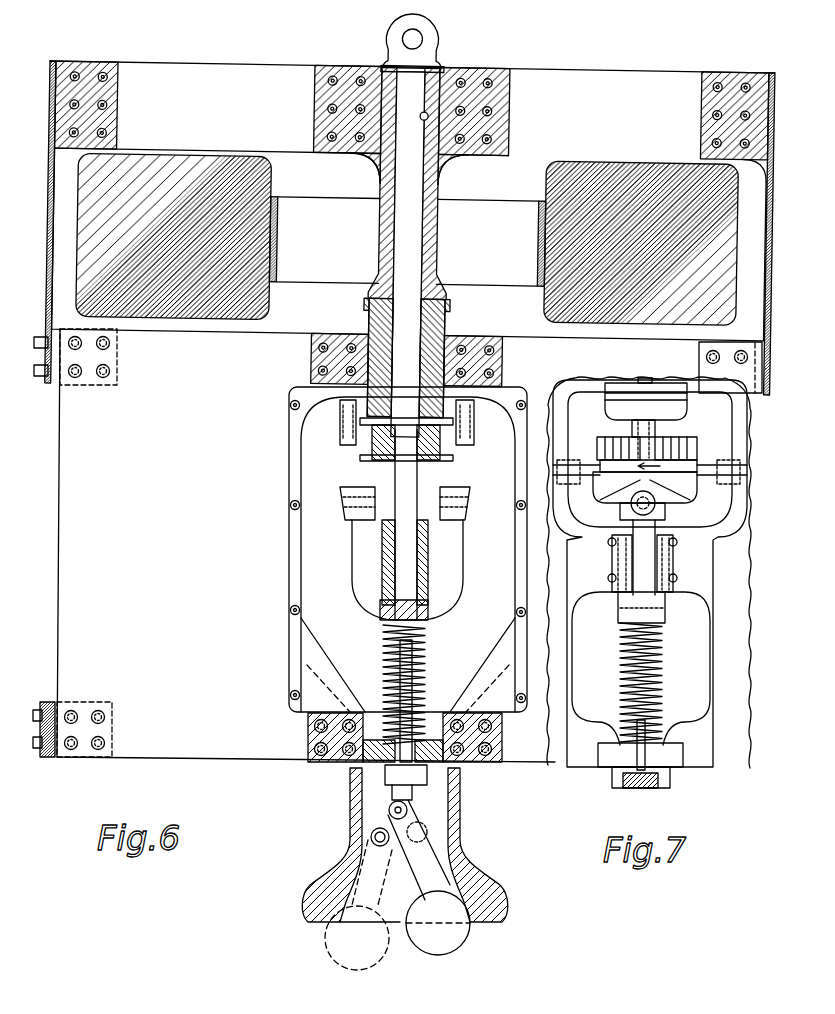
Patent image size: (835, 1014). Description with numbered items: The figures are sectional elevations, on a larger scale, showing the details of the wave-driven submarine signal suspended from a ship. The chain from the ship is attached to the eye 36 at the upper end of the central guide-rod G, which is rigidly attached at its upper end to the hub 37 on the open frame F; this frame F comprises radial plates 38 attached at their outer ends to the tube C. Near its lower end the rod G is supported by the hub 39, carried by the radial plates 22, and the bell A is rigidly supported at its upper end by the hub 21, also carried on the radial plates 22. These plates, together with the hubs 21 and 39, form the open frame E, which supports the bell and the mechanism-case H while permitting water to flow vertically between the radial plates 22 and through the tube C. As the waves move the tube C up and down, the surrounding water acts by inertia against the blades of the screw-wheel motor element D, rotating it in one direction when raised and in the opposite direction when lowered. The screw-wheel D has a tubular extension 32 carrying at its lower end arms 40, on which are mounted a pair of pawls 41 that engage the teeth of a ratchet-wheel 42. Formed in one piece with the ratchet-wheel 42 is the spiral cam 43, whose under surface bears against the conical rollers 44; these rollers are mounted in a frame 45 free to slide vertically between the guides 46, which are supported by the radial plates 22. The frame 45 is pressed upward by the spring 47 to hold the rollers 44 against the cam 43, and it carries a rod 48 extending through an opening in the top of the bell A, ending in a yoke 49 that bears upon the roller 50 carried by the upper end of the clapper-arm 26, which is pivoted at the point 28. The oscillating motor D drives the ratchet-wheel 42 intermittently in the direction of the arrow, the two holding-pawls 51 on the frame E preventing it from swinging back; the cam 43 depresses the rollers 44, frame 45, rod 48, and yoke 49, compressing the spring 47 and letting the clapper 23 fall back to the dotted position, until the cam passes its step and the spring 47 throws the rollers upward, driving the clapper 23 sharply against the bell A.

In FIG. 6, the hub 21 is at (443, 765).
In FIG. 7, the hub 21 is at (665, 758).
In FIG. 6, the radial plates 22 is at (64, 437).
In FIG. 7, the radial plates 22 is at (725, 592).
In FIG. 6, the clapper 23 is at (443, 938).
In FIG. 6, the clapper-arm 26 is at (420, 905).
In FIG. 6, the pivot point 28 is at (372, 840).
In FIG. 6, the tubular extension 32 is at (406, 357).
In FIG. 6, the eye 36 is at (434, 38).
In FIG. 6, the hub 37 is at (452, 75).
In FIG. 6, the radial plates 38 is at (208, 73).
In FIG. 6, the hub 39 is at (449, 332).
In FIG. 6, the arms 40 is at (358, 408).
In FIG. 7, the arms 40 is at (668, 418).
In FIG. 6, the pawls 41 is at (357, 446).
In FIG. 7, the pawls 41 is at (628, 442).
In FIG. 6, the ratchet-wheel 42 is at (447, 456).
In FIG. 7, the ratchet-wheel 42 is at (665, 445).
In FIG. 6, the spiral cam 43 is at (348, 480).
In FIG. 7, the spiral cam 43 is at (610, 498).
In FIG. 6, the conical rollers 44 is at (354, 513).
In FIG. 7, the conical rollers 44 is at (656, 507).
In FIG. 6, the frame 45 is at (366, 562).
In FIG. 7, the frame 45 is at (644, 557).
In FIG. 7, the guides 46 is at (615, 562).
In FIG. 6, the spring 47 is at (382, 668).
In FIG. 7, the spring 47 is at (620, 652).
In FIG. 6, the rod 48 is at (363, 768).
In FIG. 6, the yoke 49 is at (418, 826).
In FIG. 6, the roller 50 is at (390, 810).
In FIG. 7, the holding-pawls 51 is at (572, 476).
In FIG. 6, the underwater sound-producing device A is at (452, 858).
In FIG. 6, the tube C is at (47, 316).
In FIG. 6, the motor element D is at (407, 242).
In FIG. 6, the open frame E is at (194, 552).
In FIG. 7, the open frame E is at (742, 548).
In FIG. 6, the open frame F is at (597, 78).
In FIG. 6, the central guide-rod G is at (412, 238).
In FIG. 6, the mechanism-case H is at (408, 549).